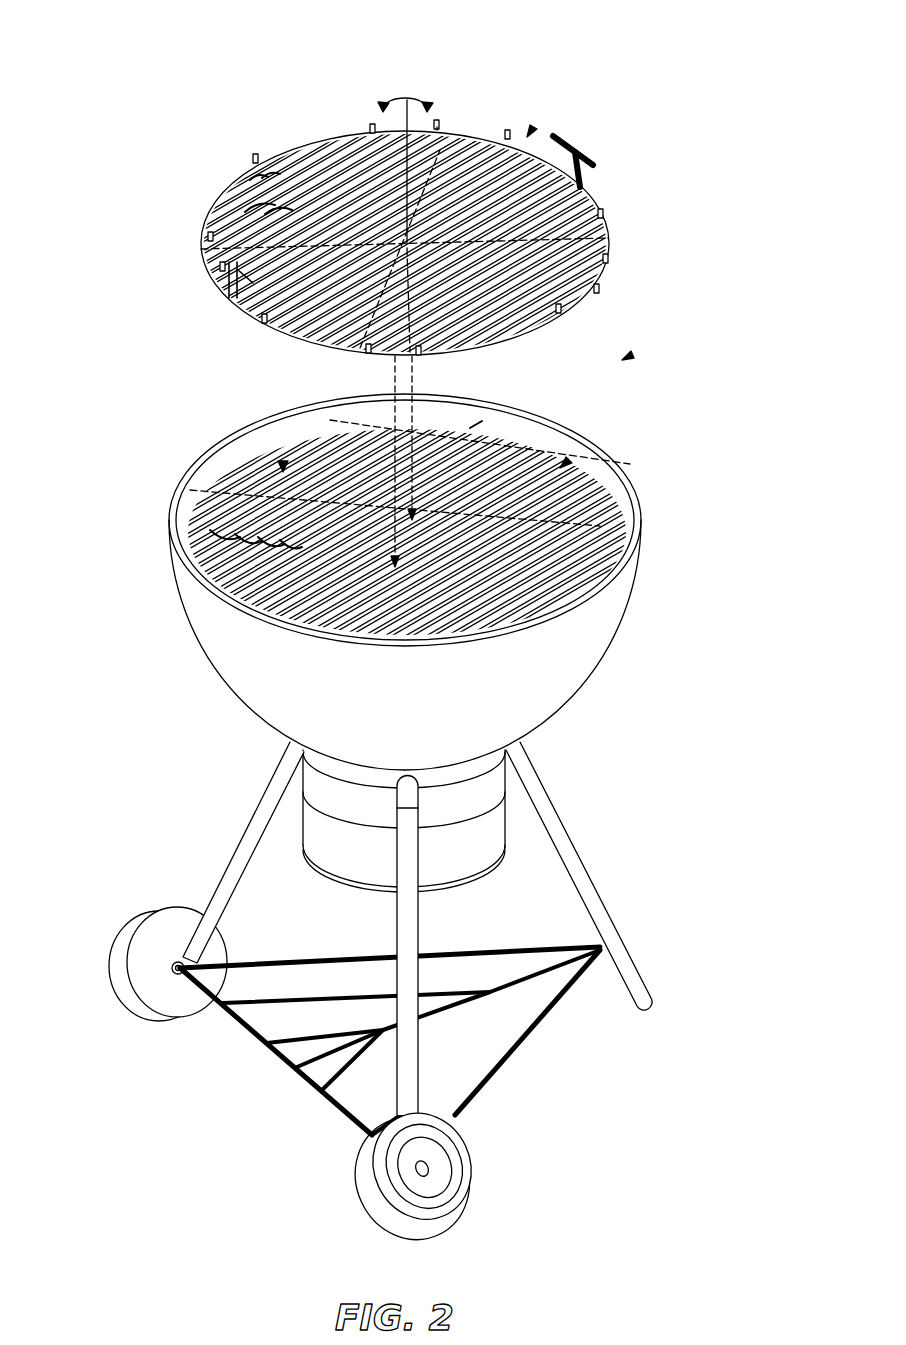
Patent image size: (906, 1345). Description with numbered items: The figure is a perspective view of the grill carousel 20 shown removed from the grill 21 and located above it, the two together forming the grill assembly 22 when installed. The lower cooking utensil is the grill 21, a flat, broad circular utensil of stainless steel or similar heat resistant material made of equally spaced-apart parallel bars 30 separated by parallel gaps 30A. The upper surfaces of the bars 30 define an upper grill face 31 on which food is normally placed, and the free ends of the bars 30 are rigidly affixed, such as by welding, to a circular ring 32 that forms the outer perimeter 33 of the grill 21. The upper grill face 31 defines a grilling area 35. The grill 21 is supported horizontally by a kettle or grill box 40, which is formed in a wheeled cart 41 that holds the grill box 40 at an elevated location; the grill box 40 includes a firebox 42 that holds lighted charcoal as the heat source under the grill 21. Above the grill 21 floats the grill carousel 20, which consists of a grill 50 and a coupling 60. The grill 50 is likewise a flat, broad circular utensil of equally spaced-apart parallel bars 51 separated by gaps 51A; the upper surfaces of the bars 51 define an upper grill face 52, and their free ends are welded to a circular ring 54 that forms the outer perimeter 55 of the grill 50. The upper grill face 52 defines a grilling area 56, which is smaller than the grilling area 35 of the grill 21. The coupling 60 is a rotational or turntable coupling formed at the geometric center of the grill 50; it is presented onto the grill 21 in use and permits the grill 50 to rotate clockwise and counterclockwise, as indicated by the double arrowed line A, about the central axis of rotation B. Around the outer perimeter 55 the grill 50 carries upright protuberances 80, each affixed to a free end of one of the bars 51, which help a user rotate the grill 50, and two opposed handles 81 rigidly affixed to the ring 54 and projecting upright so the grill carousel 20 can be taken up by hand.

The grill carousel 20 is at (527, 137).
The grill 21 is at (560, 468).
The grill assembly 22 is at (622, 360).
The parallel bars 30 is at (277, 583).
The parallel gaps 30A is at (290, 540).
The upper grill face 31 is at (283, 470).
The circular ring 32 is at (505, 440).
The outer perimeter 33 is at (476, 428).
The grilling area 35 is at (478, 522).
The grill box 40 is at (603, 662).
The wheeled cart 41 is at (578, 848).
The firebox 42 is at (472, 856).
The grill 50 is at (298, 160).
The parallel bars 51 is at (262, 212).
The gaps 51A is at (275, 176).
The upper grill face 52 is at (555, 238).
The circular ring 54 is at (583, 300).
The outer perimeter 55 is at (610, 244).
The grilling area 56 is at (505, 244).
The coupling 60 is at (403, 243).
The protuberances 80 is at (257, 160).
The handles 81 is at (588, 158).
The double arrowed line A is at (422, 92).
The axis of rotation B is at (437, 127).